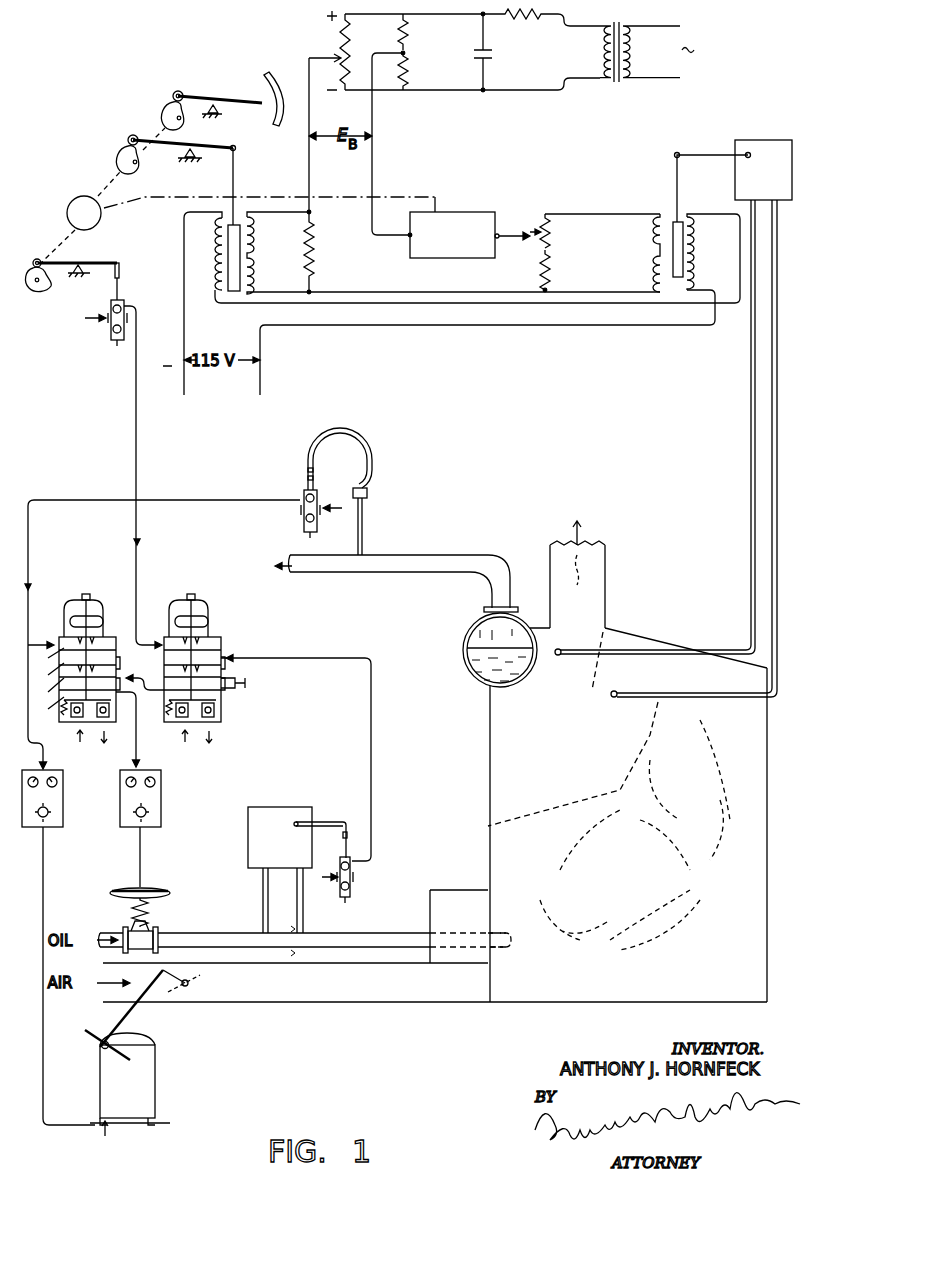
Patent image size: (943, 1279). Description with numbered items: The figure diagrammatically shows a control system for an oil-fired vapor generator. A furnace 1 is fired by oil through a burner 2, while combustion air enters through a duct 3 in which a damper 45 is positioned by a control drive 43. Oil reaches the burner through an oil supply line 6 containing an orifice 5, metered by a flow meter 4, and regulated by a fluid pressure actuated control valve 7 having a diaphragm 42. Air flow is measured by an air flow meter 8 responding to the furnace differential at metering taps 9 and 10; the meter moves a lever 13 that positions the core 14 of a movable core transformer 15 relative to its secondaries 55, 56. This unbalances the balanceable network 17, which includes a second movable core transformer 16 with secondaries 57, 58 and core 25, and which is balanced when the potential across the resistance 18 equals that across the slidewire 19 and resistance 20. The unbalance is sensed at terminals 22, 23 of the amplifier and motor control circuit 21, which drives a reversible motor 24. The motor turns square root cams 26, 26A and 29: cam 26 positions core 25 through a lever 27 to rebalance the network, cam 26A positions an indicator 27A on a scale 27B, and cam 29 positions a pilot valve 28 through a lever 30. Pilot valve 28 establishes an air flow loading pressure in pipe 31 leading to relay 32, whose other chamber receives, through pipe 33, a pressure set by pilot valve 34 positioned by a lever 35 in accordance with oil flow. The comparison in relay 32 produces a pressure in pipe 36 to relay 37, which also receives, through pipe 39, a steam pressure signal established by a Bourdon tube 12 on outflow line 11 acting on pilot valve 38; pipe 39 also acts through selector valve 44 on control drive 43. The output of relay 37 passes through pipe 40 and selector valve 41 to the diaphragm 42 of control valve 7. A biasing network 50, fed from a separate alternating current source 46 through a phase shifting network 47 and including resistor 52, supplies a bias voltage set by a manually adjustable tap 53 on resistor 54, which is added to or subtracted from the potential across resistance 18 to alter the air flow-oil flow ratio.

The furnace 1 is at (545, 851).
The burner 2 is at (499, 932).
The duct 3 is at (370, 1003).
The flow meter 4 is at (268, 807).
The orifice 5 is at (298, 946).
The oil supply line 6 is at (358, 933).
The control valve 7 is at (153, 927).
The air flow meter 8 is at (760, 140).
The metering tap 9 is at (559, 657).
The metering tap 10 is at (615, 699).
The outflow line 11 is at (445, 555).
The Bourdon tube 12 is at (365, 437).
The lever 13 is at (705, 155).
The core 14 is at (682, 288).
The movable core transformer 15 is at (483, 257).
The movable core transformer 16 is at (267, 271).
The balanceable network 17 is at (366, 282).
The resistance 18 is at (316, 251).
The slidewire 19 is at (553, 231).
The resistance 20 is at (551, 267).
The amplifier and motor control circuit 21 is at (450, 258).
The terminal 22 is at (410, 237).
The terminal 23 is at (498, 238).
The reversible motor 24 is at (80, 198).
The core 25 is at (234, 292).
The cam 26 is at (124, 158).
The square root cam 26A is at (166, 109).
The lever 27 is at (211, 146).
The indicator 27A is at (244, 98).
The scale 27B is at (277, 122).
The pilot valve 28 is at (108, 340).
The cam 29 is at (42, 290).
The lever 30 is at (100, 258).
The pipe 31 is at (137, 444).
The relay 32 is at (249, 637).
The pipe 33 is at (371, 768).
The pilot valve 34 is at (354, 876).
The lever 35 is at (343, 823).
The pipe 36 is at (146, 677).
The relay 37 is at (94, 592).
The pilot valve 38 is at (317, 495).
The pipe 39 is at (212, 500).
The pipe 40 is at (138, 743).
The selector valve 41 is at (161, 810).
The diaphragm 42 is at (150, 889).
The control drive 43 is at (155, 1085).
The selector valve 44 is at (64, 822).
The damper 45 is at (202, 977).
The source of alternating current 46 is at (647, 43).
The phase shifting network 47 is at (520, 47).
The biasing network 50 is at (496, 118).
The resistor 52 is at (389, 124).
The tap 53 is at (321, 56).
The resistor 54 is at (343, 72).
The secondary 55 is at (656, 226).
The secondary 56 is at (656, 270).
The secondary 57 is at (260, 224).
The secondary 58 is at (260, 270).